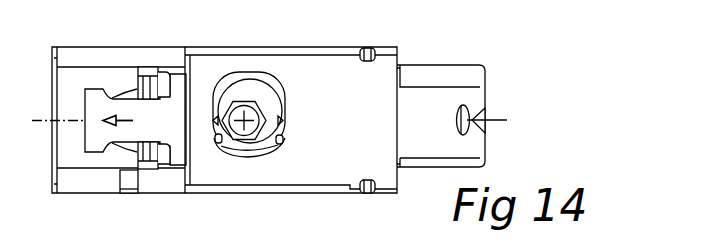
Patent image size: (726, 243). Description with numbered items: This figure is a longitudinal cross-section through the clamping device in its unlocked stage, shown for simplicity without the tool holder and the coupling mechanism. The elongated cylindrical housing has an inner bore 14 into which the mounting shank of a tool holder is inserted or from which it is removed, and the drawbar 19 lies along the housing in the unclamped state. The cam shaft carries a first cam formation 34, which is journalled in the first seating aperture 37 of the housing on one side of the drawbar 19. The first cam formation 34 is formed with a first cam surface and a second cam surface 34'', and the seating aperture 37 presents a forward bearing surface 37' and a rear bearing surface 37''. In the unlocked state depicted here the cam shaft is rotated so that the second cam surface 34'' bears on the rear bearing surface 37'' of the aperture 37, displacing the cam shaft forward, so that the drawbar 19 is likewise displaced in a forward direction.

The inner bore 14 is at (103, 77).
The drawbar 19 is at (173, 113).
The first cam formation 34 is at (248, 77).
The second cam surface 34'' is at (259, 79).
The first seating aperture 37 is at (249, 186).
The retaining element 37' is at (201, 180).
The rear bearing surface 37'' is at (295, 183).